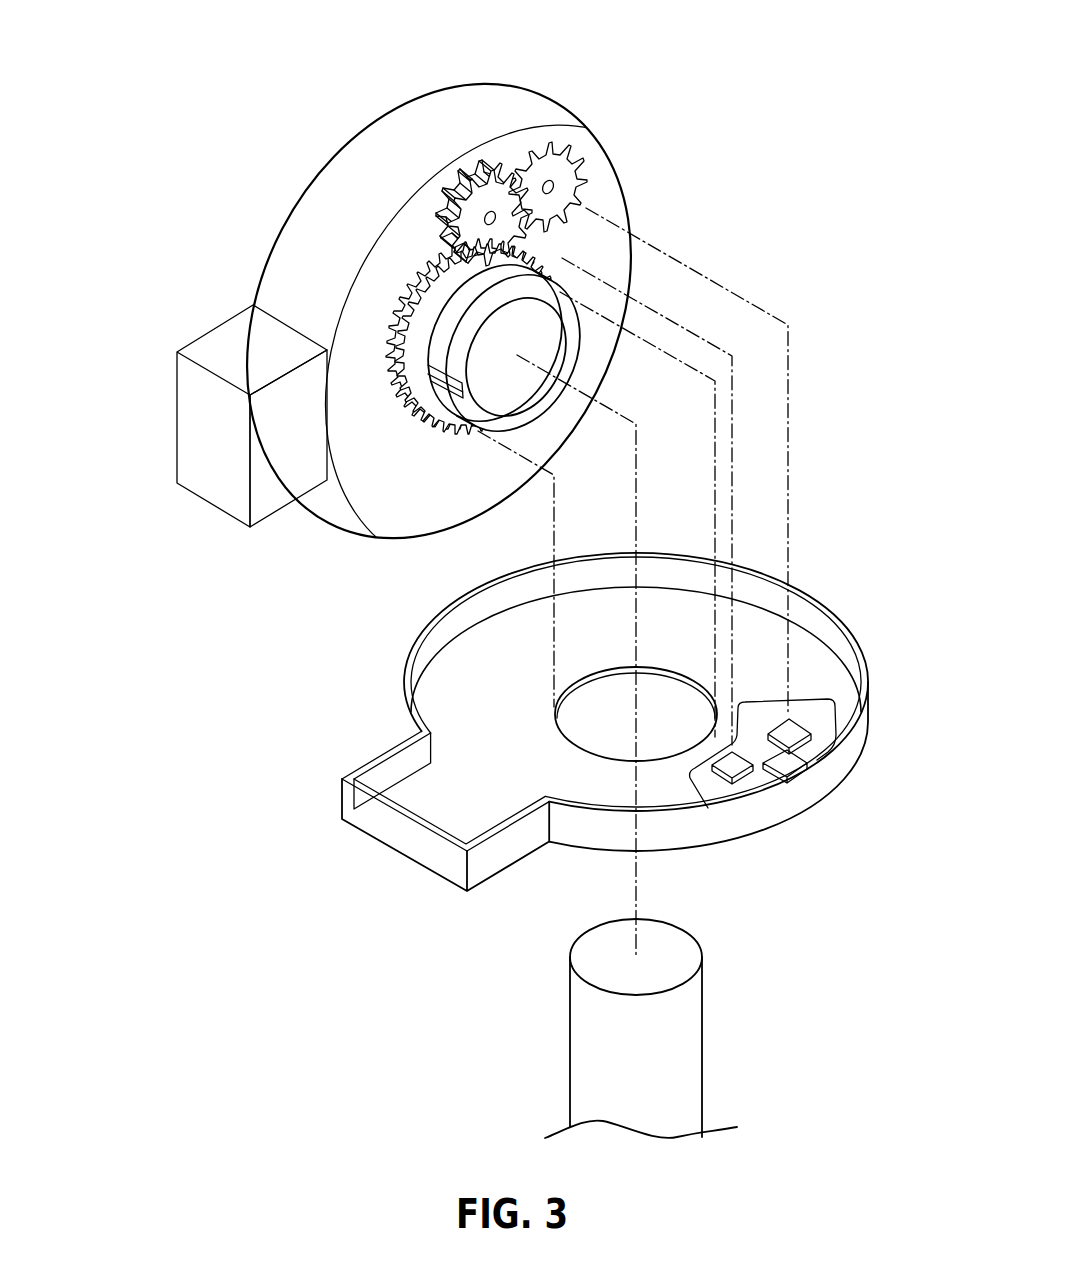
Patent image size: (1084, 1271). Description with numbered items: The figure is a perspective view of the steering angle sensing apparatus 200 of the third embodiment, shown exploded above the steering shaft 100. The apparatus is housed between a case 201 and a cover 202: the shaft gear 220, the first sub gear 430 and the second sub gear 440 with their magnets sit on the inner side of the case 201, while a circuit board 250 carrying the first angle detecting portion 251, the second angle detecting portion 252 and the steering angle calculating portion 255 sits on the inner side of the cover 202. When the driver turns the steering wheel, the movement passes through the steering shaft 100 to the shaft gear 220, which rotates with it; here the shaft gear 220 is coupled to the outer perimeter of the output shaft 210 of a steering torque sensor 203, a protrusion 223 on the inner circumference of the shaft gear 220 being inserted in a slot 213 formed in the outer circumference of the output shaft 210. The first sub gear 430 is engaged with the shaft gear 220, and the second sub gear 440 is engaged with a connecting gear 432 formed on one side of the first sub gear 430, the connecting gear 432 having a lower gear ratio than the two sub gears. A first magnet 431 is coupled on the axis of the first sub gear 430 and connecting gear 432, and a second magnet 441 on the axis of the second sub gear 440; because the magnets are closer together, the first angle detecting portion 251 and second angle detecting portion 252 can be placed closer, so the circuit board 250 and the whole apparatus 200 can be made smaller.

The steering shaft 100 is at (688, 1052).
The steering angle sensing apparatus 200 is at (660, 218).
The case 201 is at (200, 414).
The cover 202 is at (402, 833).
The steering torque sensor 203 is at (268, 238).
The output shaft 210 is at (567, 337).
The slot 213 is at (437, 424).
The shaft gear 220 is at (430, 287).
The protrusion 223 is at (427, 372).
The circuit board 250 is at (813, 710).
The first angle detecting portion 251 is at (740, 768).
The second angle detecting portion 252 is at (808, 727).
The steering angle calculating portion 255 is at (808, 758).
The first sub gear 430 is at (483, 168).
The first magnet 431 is at (444, 221).
The connecting gear 432 is at (449, 196).
The second sub gear 440 is at (548, 144).
The second magnet 441 is at (556, 187).